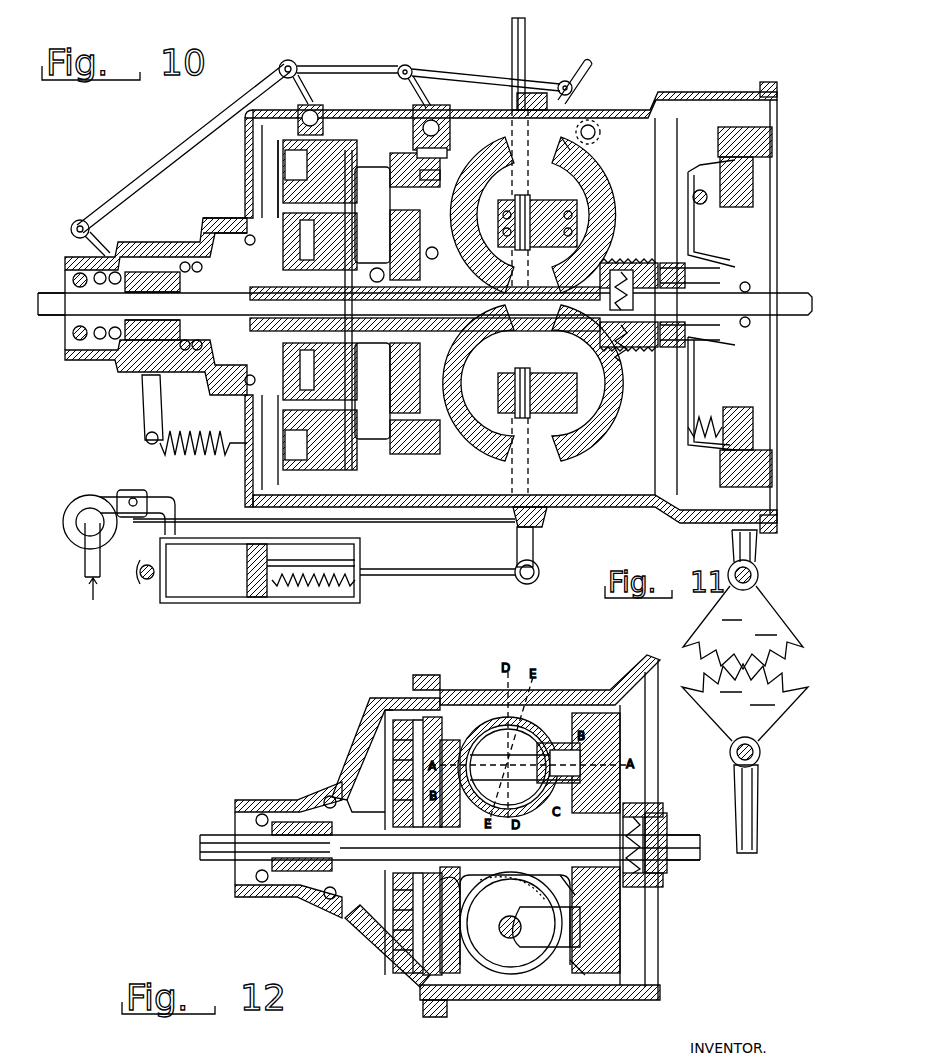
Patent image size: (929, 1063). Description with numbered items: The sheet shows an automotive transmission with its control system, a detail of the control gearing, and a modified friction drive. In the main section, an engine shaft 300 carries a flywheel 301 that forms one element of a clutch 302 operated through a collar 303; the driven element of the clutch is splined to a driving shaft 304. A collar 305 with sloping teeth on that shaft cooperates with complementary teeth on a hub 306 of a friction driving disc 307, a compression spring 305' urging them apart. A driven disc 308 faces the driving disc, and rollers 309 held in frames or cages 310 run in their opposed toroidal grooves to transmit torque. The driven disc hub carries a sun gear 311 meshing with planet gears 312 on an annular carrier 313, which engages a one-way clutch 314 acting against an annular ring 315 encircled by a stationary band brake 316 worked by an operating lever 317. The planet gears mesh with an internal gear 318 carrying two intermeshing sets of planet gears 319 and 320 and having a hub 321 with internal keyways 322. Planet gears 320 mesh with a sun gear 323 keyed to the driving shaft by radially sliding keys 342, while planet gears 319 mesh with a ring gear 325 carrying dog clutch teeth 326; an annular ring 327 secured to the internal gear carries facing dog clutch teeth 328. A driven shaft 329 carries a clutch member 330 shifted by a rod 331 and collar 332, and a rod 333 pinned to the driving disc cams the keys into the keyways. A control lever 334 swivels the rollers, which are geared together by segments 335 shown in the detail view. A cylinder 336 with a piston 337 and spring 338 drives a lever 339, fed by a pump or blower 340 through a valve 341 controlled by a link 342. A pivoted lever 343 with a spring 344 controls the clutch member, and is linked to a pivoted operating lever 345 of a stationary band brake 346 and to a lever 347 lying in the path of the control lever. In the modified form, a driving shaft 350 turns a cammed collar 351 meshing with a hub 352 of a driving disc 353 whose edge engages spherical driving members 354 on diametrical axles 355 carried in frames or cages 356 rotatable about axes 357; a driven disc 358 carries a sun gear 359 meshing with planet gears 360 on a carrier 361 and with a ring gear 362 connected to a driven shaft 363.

In FIG. 10, the engine shaft 300 is at (790, 290).
In FIG. 10, the flywheel 301 is at (745, 160).
In FIG. 10, the clutch 302 is at (720, 127).
In FIG. 10, the collar 303 is at (672, 490).
In FIG. 10, the driving shaft 304 is at (658, 375).
In FIG. 10, the collar 305 is at (629, 358).
In FIG. 10, the compression spring 305' is at (631, 265).
In FIG. 10, the hub 306 is at (619, 262).
In FIG. 10, the friction driving disc 307 is at (590, 208).
In FIG. 10, the driven disc 308 is at (497, 170).
In FIG. 10, the rollers 309 is at (498, 245).
In FIG. 10, the frames or cages 310 is at (572, 176).
In FIG. 10, the sun gear 311 is at (448, 433).
In FIG. 10, the planet gears 312 is at (400, 165).
In FIG. 10, the annular carrier 313 is at (440, 178).
In FIG. 10, the one-way clutch 314 is at (437, 160).
In FIG. 10, the annular ring 315 is at (446, 150).
In FIG. 10, the stationary band brake 316 is at (406, 64).
In FIG. 10, the operating lever 317 is at (380, 67).
In FIG. 10, the internal gear 318 is at (368, 165).
In FIG. 10, the planet gears 319 is at (333, 160).
In FIG. 10, the planet gears 320 is at (335, 425).
In FIG. 10, the hub 321 is at (362, 268).
In FIG. 10, the internal keyways 322 is at (372, 345).
In FIG. 10, the sun gear 323 is at (290, 405).
In FIG. 10, the ring gear 325 is at (272, 135).
In FIG. 10, the dog clutch teeth 326 is at (226, 260).
In FIG. 10, the annular ring 327 is at (268, 162).
In FIG. 10, the dog clutch teeth 328 is at (260, 190).
In FIG. 10, the driven shaft 329 is at (57, 362).
In FIG. 10, the clutch member 330 is at (242, 237).
In FIG. 10, the rod 331 is at (160, 380).
In FIG. 10, the collar 332 is at (128, 366).
In FIG. 10, the rod 333 is at (499, 327).
In FIG. 10, the control lever 334 is at (527, 34).
In FIG. 11, the segments 335 is at (722, 682).
In FIG. 10, the cylinder 336 is at (195, 605).
In FIG. 10, the piston 337 is at (260, 605).
In FIG. 10, the spring 338 is at (316, 605).
In FIG. 10, the lever 339 is at (541, 547).
In FIG. 10, the pump or blower 340 is at (80, 548).
In FIG. 10, the valve 341 is at (130, 490).
In FIG. 10, the link 342 is at (258, 518).
In FIG. 10, the pivoted lever 343 is at (97, 215).
In FIG. 10, the spring 344 is at (218, 457).
In FIG. 10, the pivoted operating lever 345 is at (279, 70).
In FIG. 10, the stationary band brake 346 is at (312, 108).
In FIG. 10, the lever 347 is at (580, 72).
In FIG. 12, the driving shaft 350 is at (673, 862).
In FIG. 12, the cammed collar 351 is at (667, 880).
In FIG. 12, the hub 352 is at (640, 887).
In FIG. 12, the driving disc 353 is at (603, 950).
In FIG. 12, the spherical driving members 354 is at (520, 722).
In FIG. 12, the diametrical axles 355 is at (490, 718).
In FIG. 12, the frames or cages 356 is at (553, 938).
In FIG. 12, the axes 357 is at (517, 938).
In FIG. 12, the driven disc 358 is at (418, 993).
In FIG. 12, the sun gear 359 is at (362, 888).
In FIG. 12, the planet gears 360 is at (415, 750).
In FIG. 12, the carrier 361 is at (388, 805).
In FIG. 12, the ring gear 362 is at (390, 790).
In FIG. 12, the driven shaft 363 is at (215, 838).